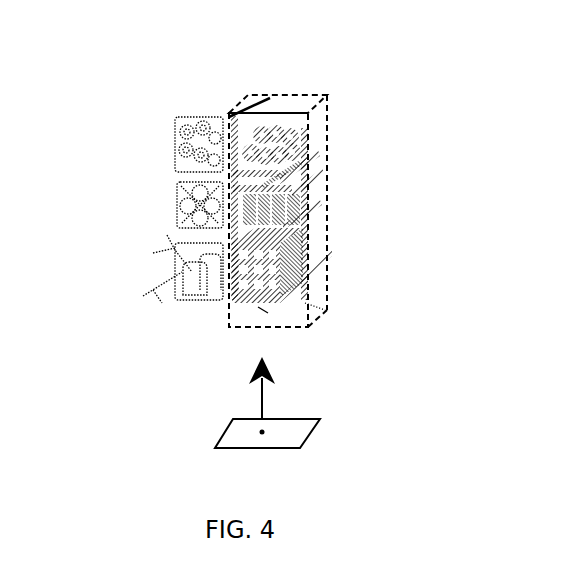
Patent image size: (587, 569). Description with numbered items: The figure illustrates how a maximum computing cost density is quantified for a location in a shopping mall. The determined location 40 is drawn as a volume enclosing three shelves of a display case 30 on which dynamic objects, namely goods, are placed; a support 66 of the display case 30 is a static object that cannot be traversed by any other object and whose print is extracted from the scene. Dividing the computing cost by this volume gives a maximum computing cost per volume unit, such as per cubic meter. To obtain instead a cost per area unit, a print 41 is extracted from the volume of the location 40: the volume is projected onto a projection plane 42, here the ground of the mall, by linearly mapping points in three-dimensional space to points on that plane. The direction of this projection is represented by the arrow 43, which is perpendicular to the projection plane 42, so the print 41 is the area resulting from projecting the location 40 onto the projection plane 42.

The display case 30 is at (212, 85).
The location 40 is at (289, 96).
The support 66 is at (267, 100).
The print 41 is at (328, 418).
The projection plane 42 is at (246, 432).
The arrow 43 is at (245, 388).